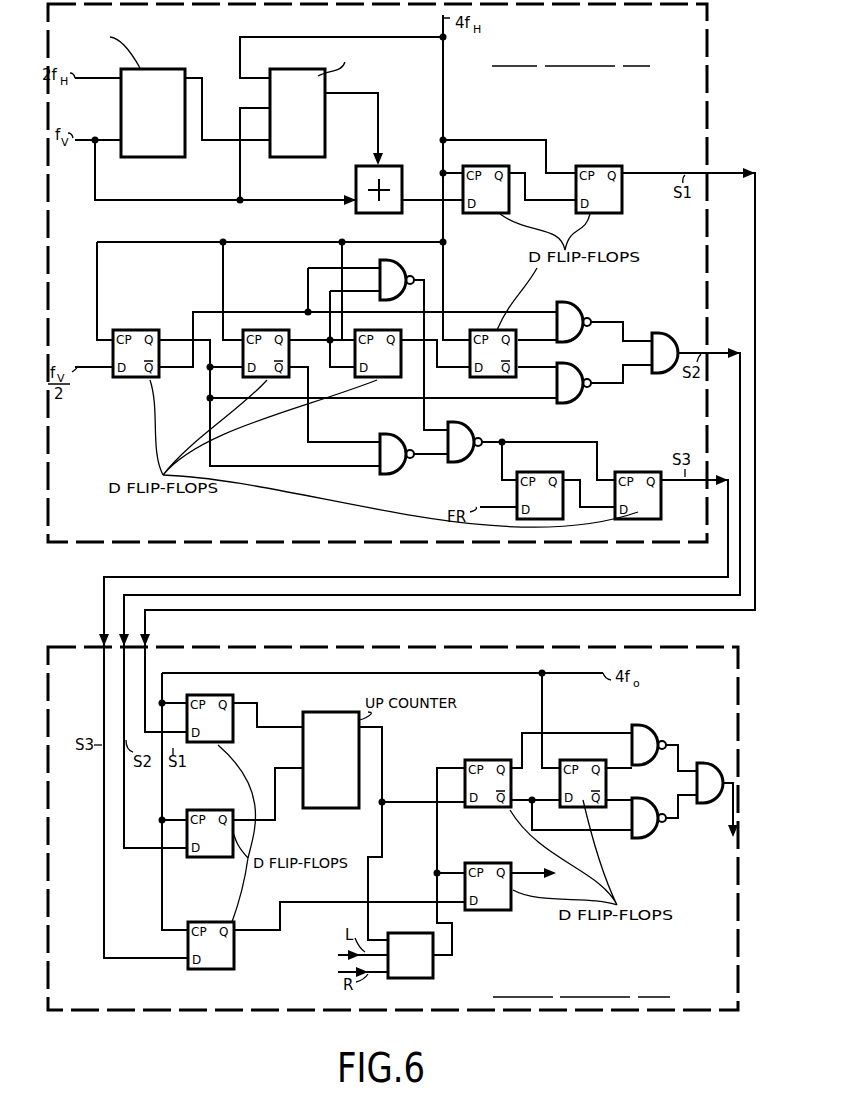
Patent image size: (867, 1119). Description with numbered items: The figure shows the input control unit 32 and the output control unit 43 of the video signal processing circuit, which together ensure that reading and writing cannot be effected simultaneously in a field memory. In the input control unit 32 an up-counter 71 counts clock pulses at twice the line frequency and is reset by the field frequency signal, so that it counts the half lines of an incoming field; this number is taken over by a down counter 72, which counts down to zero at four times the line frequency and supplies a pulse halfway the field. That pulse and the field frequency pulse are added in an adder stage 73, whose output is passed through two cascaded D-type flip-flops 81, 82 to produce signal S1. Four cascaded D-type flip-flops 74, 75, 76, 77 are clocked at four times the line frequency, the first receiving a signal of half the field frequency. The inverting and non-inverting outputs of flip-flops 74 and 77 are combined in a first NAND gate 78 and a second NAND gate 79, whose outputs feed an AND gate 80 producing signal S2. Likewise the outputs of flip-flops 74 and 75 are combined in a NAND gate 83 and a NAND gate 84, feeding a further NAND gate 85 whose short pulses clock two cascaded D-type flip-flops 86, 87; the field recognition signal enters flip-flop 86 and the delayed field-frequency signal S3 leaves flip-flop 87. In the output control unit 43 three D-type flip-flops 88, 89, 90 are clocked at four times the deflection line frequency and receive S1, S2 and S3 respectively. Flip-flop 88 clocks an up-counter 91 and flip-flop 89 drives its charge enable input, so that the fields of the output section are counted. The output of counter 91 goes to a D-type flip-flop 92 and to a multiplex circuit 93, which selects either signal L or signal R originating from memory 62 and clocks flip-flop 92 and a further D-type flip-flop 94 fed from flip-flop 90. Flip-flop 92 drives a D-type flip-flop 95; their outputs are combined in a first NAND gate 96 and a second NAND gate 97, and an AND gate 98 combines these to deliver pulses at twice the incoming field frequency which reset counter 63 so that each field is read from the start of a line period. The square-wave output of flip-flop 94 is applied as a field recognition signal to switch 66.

The input control unit 32 is at (707, 420).
The output control unit 43 is at (762, 643).
The up-counter 71 is at (161, 66).
The down counter 72 is at (306, 66).
The adder stage 73 is at (356, 190).
The D-type flip-flop 74 is at (140, 378).
The D-type flip-flop 75 is at (262, 379).
The D-type flip-flop 76 is at (362, 378).
The D-type flip-flop 77 is at (482, 378).
The first NAND gate 78 is at (576, 302).
The second NAND gate 79 is at (575, 403).
The AND gate 80 is at (665, 333).
The D-type flip-flop 81 is at (494, 213).
The D-type flip-flop 82 is at (608, 213).
The NAND gate 83 is at (385, 261).
The NAND gate 84 is at (394, 475).
The further NAND gate 85 is at (460, 424).
The D-type flip-flop 86 is at (547, 474).
The D-type flip-flop 87 is at (646, 474).
The D-type flip-flop 88 is at (229, 743).
The D-type flip-flop 89 is at (227, 810).
The D-type flip-flop 90 is at (210, 922).
The up-counter 91 is at (342, 711).
The D-type flip-flop 92 is at (499, 757).
The multiplex circuit 93 is at (433, 970).
The D-type flip-flop 94 is at (490, 912).
The D-type flip-flop 95 is at (596, 757).
The first NAND gate 96 is at (648, 711).
The second NAND gate 97 is at (653, 840).
The AND gate 98 is at (712, 762).
The memory 62 is at (340, 960).
The counter 63 is at (731, 829).
The switch 66 is at (546, 875).